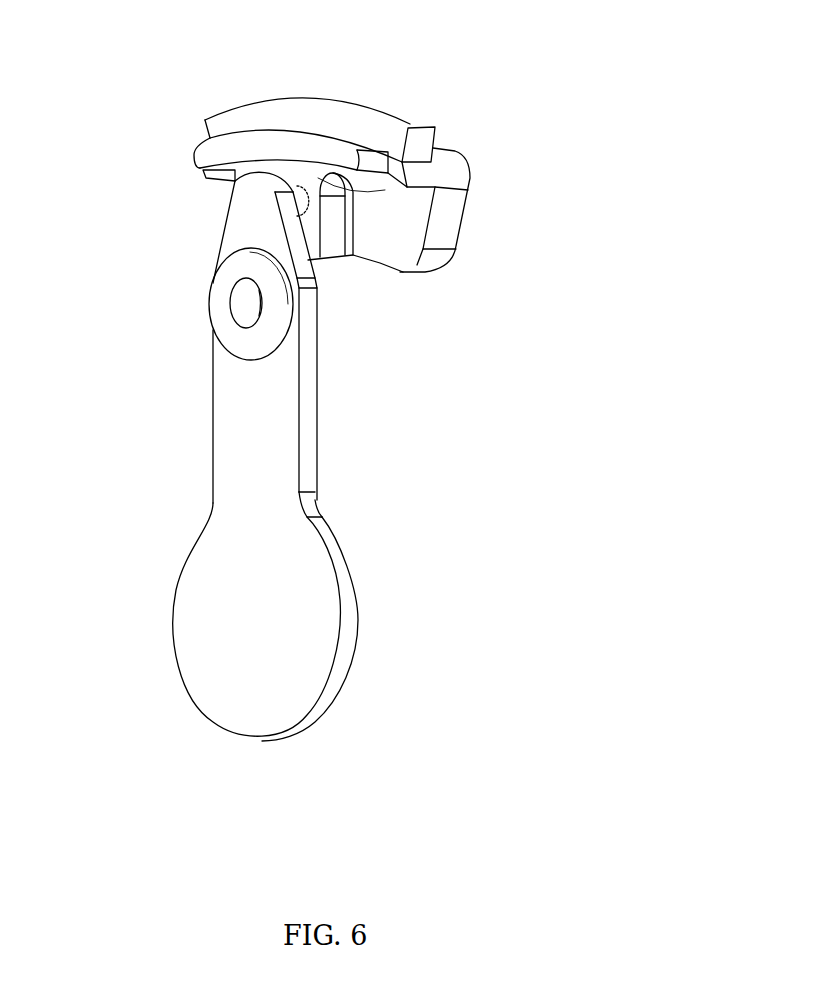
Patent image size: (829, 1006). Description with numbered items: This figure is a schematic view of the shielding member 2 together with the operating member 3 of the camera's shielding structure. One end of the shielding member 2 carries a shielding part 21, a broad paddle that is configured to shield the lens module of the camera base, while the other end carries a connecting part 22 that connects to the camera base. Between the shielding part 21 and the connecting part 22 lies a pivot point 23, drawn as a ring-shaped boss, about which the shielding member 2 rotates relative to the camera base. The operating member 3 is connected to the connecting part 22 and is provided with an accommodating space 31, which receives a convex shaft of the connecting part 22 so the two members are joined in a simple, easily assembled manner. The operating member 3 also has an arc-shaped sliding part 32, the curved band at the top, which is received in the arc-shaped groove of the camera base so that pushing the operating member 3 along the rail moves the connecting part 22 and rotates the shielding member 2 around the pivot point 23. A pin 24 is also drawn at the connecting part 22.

The shielding member 2 is at (270, 428).
The shielding part 21 is at (272, 613).
The connecting part 22 is at (250, 220).
The pivot point 23 is at (240, 343).
The pin 24 is at (300, 190).
The operating member 3 is at (397, 222).
The accommodating space 31 is at (337, 217).
The arc-shaped sliding part 32 is at (225, 152).